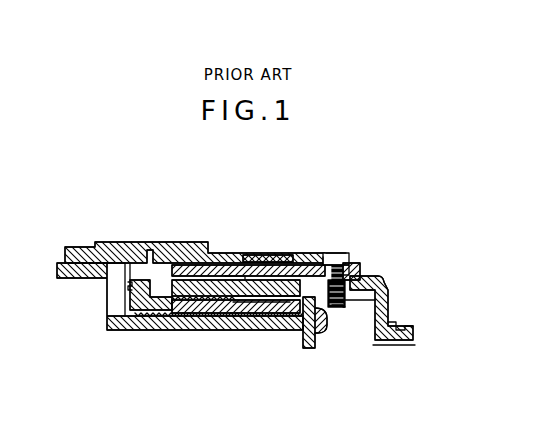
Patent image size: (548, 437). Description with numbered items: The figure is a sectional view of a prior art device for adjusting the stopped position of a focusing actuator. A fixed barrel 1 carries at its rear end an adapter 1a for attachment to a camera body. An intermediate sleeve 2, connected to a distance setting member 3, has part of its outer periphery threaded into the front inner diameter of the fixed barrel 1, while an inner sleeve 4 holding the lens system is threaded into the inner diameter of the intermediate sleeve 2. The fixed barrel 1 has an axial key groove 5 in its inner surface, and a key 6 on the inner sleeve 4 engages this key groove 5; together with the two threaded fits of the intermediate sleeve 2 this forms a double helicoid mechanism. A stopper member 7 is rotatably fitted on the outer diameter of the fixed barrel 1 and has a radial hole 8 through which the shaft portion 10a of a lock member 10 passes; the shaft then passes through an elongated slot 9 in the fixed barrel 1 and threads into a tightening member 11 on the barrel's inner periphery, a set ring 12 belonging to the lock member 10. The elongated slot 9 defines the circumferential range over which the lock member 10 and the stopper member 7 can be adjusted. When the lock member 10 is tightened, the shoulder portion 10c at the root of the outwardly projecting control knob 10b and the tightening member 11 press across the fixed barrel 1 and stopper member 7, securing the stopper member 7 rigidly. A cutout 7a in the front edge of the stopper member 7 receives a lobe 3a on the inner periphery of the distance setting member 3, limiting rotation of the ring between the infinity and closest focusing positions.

The fixed barrel 1 is at (385, 288).
The adapter 1a is at (403, 327).
The intermediate sleeve 2 is at (190, 322).
The distance setting member 3 is at (166, 250).
The lobe 3a is at (241, 253).
The inner sleeve 4 is at (228, 300).
The key groove 5 is at (265, 294).
The key 6 is at (302, 332).
The stopper member 7 is at (275, 272).
The cutout 7a is at (197, 268).
The radial hole 8 is at (357, 270).
The elongated slot 9 is at (350, 302).
The lock member 10 is at (331, 252).
The shaft portion 10a is at (326, 263).
The control knob 10b is at (339, 262).
The shoulder portion 10c is at (345, 268).
The tightening member 11 is at (347, 307).
The set ring 12 is at (334, 305).